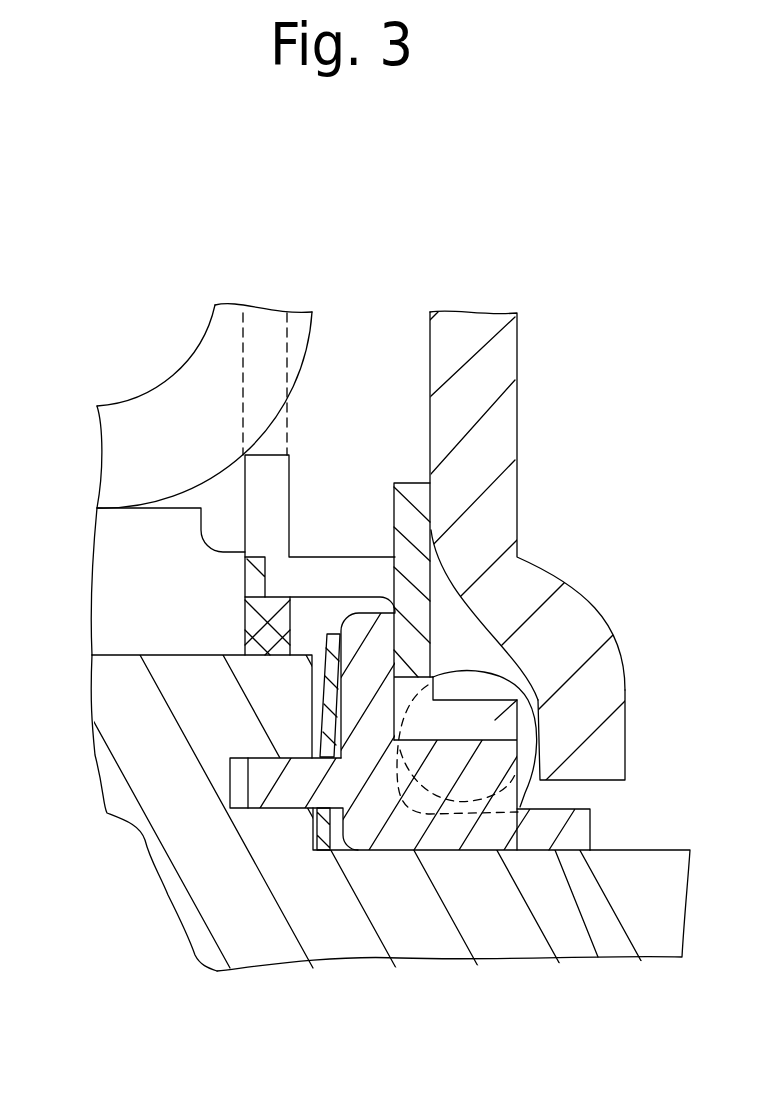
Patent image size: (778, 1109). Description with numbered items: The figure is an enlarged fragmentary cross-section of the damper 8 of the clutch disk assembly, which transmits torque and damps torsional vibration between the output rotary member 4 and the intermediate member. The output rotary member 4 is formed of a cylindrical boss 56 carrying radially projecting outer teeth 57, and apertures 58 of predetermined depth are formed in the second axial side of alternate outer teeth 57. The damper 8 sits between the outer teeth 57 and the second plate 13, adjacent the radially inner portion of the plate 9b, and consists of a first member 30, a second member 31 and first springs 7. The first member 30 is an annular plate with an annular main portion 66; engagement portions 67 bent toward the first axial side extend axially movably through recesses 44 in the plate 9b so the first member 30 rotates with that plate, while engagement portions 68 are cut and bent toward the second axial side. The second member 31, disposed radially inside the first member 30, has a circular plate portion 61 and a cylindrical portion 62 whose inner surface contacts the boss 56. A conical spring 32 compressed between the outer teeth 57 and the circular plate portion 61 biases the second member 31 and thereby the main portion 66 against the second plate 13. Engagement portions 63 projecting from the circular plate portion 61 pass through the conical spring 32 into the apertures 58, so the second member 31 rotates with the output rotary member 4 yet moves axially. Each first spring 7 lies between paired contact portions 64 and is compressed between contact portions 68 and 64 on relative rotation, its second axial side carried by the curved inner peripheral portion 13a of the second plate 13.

The output rotary member 4 is at (543, 975).
The first spring 7 is at (490, 683).
The damper 8 is at (453, 630).
The plate 9b is at (303, 425).
The second plate 13 is at (494, 423).
The inner peripheral portion 13a is at (583, 693).
The first member 30 is at (365, 513).
The second member 31 is at (372, 871).
The conical spring 32 is at (322, 690).
The recess 44 is at (243, 568).
The boss 56 is at (413, 920).
The outer tooth 57 is at (150, 747).
The aperture 58 is at (230, 790).
The circular plate portion 61 is at (362, 662).
The cylindrical portion 62 is at (480, 840).
The engagement portion 63 is at (283, 798).
The contact portion 64 is at (492, 780).
The main portion 66 is at (405, 587).
The engagement portion 67 is at (325, 557).
The engagement portion 68 is at (545, 657).